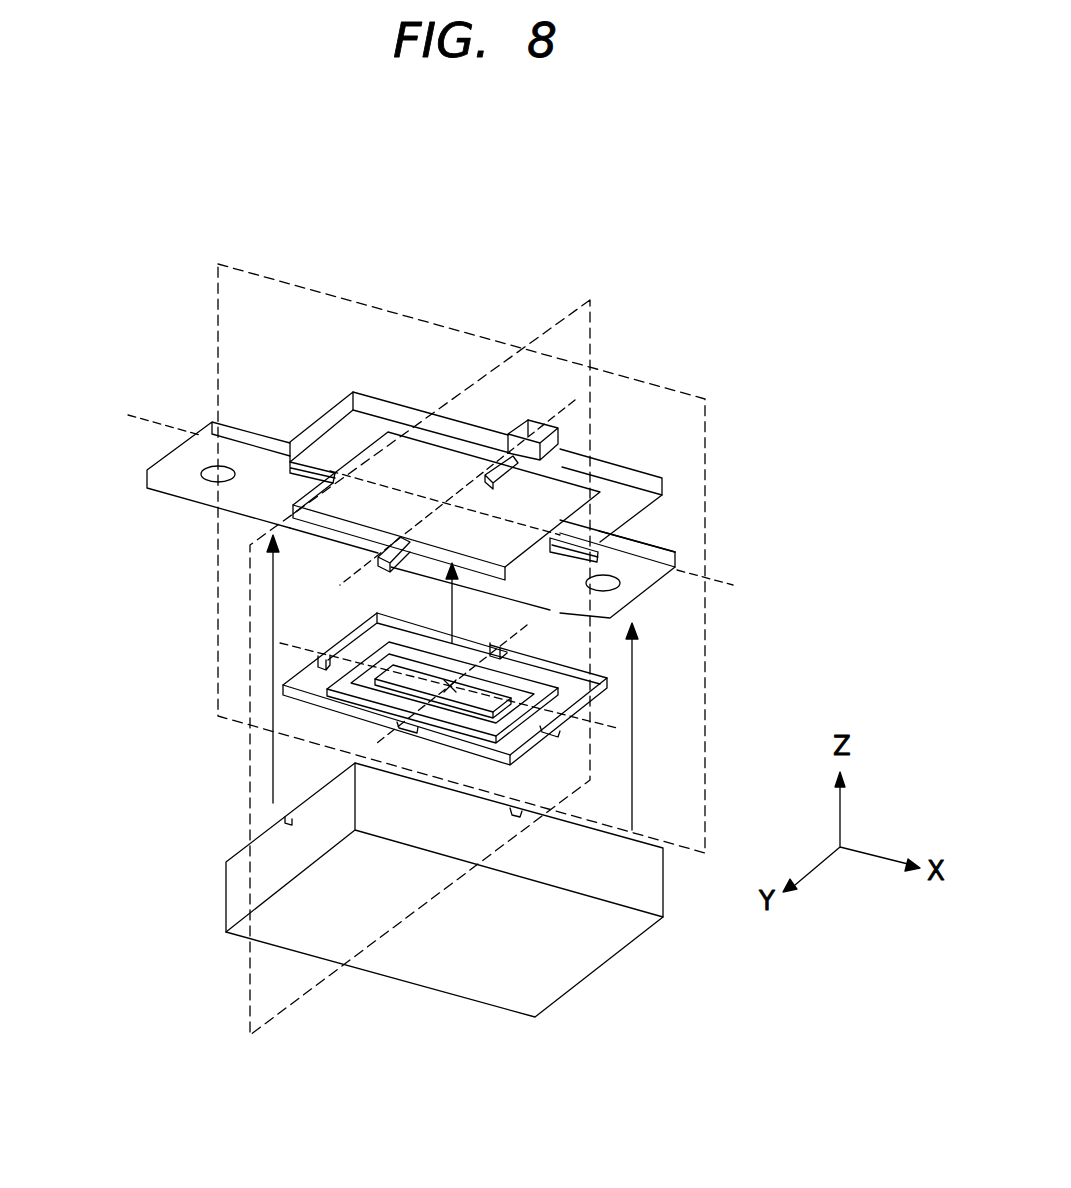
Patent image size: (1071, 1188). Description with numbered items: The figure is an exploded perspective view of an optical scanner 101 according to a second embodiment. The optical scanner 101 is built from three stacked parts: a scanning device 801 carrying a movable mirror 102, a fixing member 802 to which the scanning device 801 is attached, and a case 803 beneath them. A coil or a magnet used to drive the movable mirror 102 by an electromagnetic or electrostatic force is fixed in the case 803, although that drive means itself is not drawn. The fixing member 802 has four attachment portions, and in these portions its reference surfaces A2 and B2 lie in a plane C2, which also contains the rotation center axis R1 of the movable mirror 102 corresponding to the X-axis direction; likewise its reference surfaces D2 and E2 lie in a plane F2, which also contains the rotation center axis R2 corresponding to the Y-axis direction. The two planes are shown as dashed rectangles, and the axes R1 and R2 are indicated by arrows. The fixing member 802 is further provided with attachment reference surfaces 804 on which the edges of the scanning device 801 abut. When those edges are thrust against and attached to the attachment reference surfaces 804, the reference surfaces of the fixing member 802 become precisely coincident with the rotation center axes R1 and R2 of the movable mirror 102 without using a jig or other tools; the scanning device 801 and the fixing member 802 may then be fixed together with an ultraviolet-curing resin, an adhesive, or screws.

The optical scanner 101 is at (450, 254).
The movable mirror 102 is at (460, 700).
The scanning device 801 is at (349, 782).
The fixing member 802 is at (438, 470).
The case 803 is at (303, 897).
The attachment reference surfaces 804 is at (436, 511).
The reference surface A2 is at (719, 591).
The reference surface B2 is at (157, 436).
The plane C2 is at (252, 325).
The reference surface D2 is at (357, 556).
The reference surface E2 is at (510, 432).
The plane F2 is at (262, 978).
The rotation center axis R1 is at (634, 722).
The rotation center axis R2 is at (325, 729).